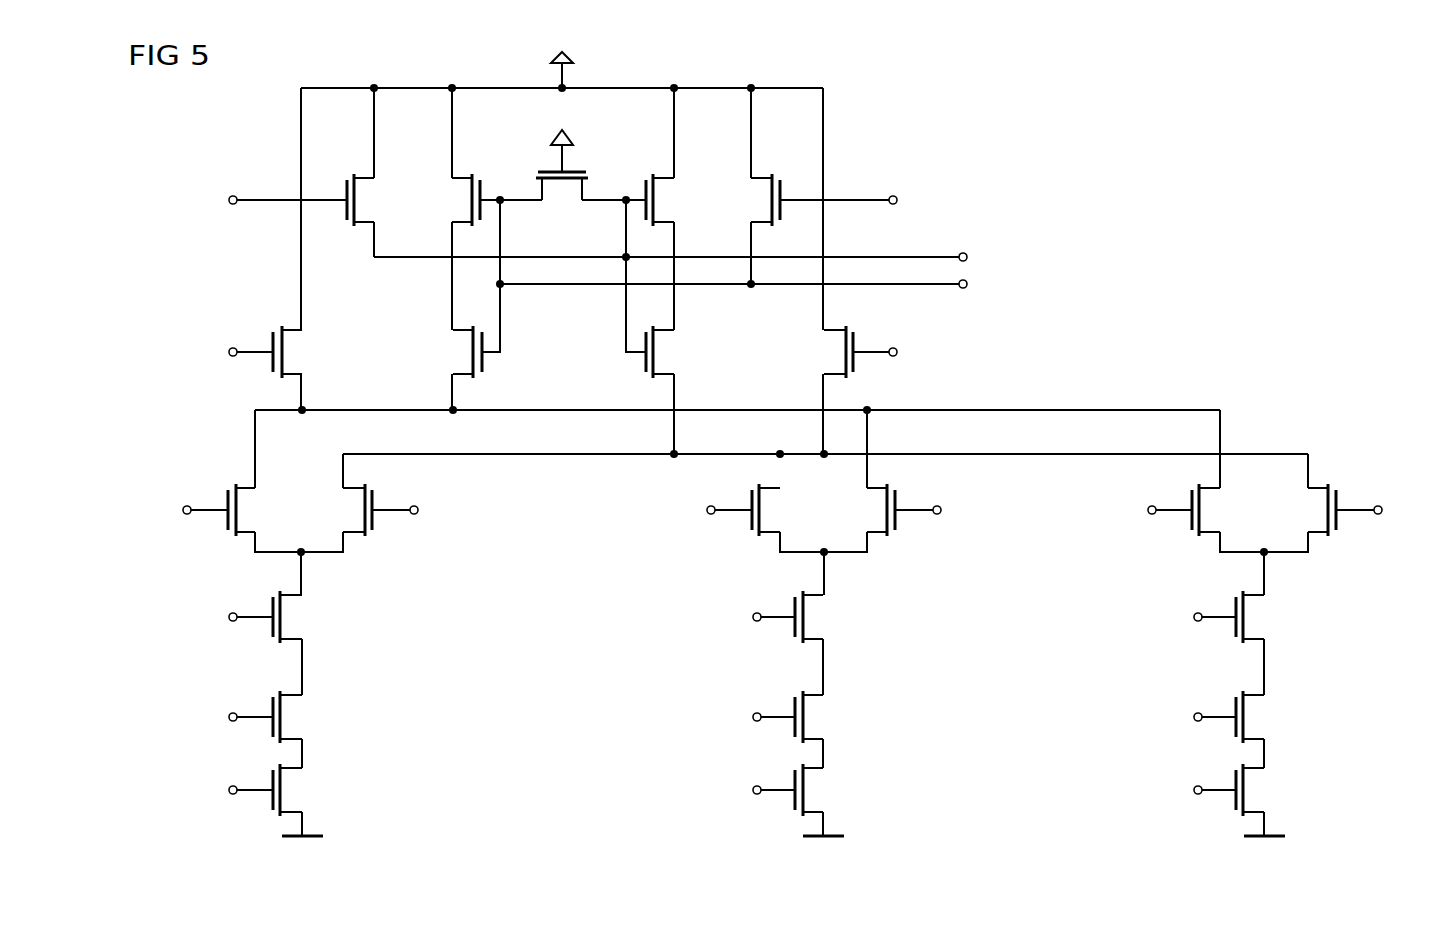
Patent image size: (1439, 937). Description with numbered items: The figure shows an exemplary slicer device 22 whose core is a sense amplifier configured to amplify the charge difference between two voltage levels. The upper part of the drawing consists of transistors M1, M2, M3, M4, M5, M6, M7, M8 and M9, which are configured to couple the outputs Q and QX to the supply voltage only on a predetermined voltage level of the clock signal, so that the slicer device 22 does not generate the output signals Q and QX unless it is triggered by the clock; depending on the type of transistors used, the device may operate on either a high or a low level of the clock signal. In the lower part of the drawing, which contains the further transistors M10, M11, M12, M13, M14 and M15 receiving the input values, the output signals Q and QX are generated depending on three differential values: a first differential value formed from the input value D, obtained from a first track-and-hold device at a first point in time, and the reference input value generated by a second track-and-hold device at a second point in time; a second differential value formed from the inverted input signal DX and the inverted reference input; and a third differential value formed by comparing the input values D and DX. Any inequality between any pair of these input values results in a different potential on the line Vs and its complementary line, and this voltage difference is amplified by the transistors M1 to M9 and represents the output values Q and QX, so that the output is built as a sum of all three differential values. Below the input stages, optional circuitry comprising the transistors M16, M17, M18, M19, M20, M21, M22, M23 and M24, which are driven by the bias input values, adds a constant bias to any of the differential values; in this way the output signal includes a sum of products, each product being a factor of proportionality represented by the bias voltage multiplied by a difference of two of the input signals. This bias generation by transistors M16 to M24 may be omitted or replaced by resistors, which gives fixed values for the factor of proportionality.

The slicer device 22 is at (1212, 176).
The transistor M1 is at (300, 352).
The transistor M2 is at (372, 200).
The transistor M3 is at (562, 197).
The transistor M4 is at (755, 200).
The transistor M5 is at (829, 352).
The transistor M6 is at (454, 200).
The transistor M7 is at (455, 352).
The transistor M8 is at (673, 200).
The transistor M9 is at (673, 352).
The transistor M10 is at (259, 510).
The transistor M11 is at (342, 510).
The transistor M12 is at (782, 510).
The transistor M13 is at (866, 510).
The transistor M14 is at (1223, 510).
The transistor M15 is at (1306, 510).
The transistor M16 is at (307, 617).
The transistor M17 is at (829, 617).
The transistor M18 is at (1270, 617).
The transistor M19 is at (307, 717).
The transistor M20 is at (307, 790).
The transistor M21 is at (829, 717).
The transistor M22 is at (829, 790).
The transistor M23 is at (1270, 717).
The transistor M24 is at (1270, 790).